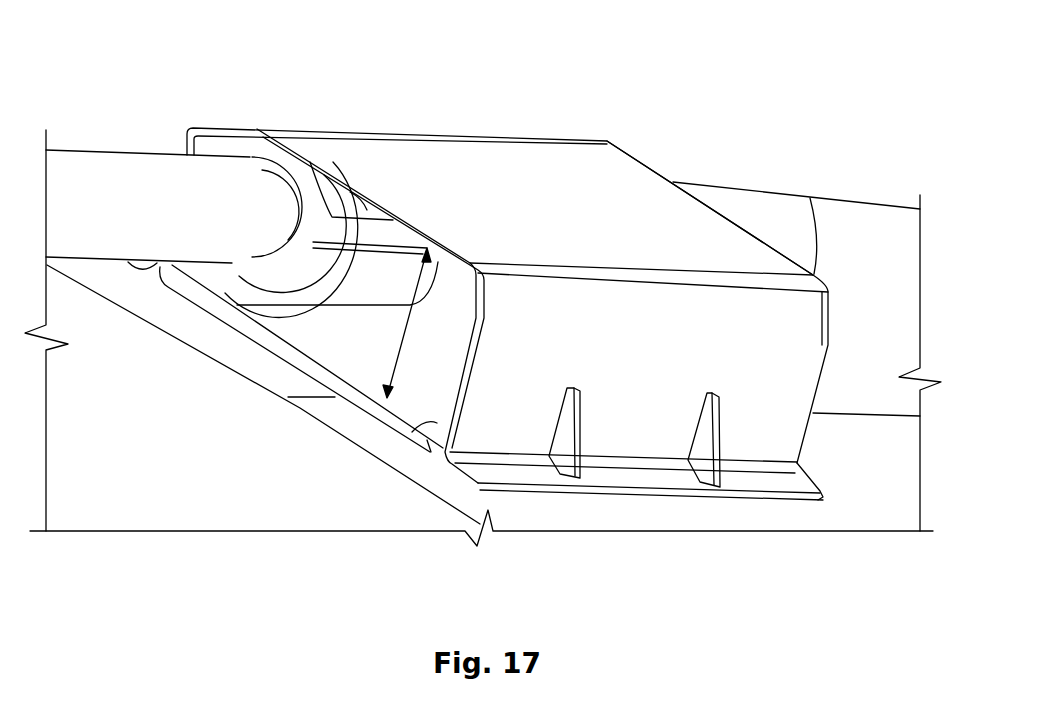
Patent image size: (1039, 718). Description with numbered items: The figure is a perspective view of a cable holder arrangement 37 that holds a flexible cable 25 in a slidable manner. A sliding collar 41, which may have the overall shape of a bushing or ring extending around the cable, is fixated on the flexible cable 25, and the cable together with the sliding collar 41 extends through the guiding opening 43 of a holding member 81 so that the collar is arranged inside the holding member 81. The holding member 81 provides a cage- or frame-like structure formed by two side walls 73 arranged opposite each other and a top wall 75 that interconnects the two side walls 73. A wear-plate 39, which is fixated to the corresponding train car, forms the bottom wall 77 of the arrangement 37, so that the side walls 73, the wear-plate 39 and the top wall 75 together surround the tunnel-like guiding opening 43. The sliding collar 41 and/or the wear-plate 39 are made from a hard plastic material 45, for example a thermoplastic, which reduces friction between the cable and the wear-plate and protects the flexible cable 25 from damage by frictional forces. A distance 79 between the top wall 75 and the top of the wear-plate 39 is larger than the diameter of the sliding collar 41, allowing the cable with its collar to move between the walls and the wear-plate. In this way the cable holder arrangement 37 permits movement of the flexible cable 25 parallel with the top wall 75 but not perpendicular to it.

The flexible cable 25 is at (840, 226).
The cable holder arrangement 37 is at (594, 83).
The wear-plate 39 is at (438, 396).
The sliding collar 41 is at (248, 157).
The guiding opening 43 is at (452, 338).
The hard plastic material 45 is at (790, 440).
The side walls 73 is at (184, 145).
The top wall 75 is at (500, 218).
The bottom wall 77 is at (341, 346).
The distance 79 is at (405, 348).
The holding member 81 is at (633, 198).